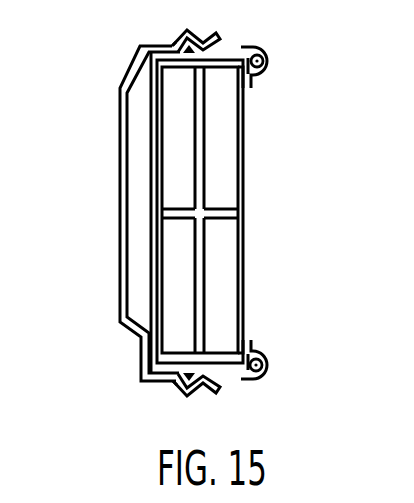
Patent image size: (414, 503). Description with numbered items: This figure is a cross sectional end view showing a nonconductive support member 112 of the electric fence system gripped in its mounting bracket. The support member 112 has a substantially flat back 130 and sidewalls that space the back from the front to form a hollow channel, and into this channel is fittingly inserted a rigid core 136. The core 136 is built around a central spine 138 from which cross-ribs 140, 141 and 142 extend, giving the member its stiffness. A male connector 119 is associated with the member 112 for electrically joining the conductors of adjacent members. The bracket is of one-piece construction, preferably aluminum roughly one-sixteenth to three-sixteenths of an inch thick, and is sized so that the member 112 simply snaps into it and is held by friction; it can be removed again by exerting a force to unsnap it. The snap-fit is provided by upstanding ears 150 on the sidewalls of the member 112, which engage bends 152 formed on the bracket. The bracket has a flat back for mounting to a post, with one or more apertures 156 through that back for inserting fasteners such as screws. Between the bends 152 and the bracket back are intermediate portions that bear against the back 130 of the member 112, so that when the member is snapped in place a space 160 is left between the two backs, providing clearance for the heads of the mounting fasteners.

The nonconductive support member 112 is at (262, 49).
The male connector 119 is at (263, 63).
The flat back 130 is at (150, 162).
The rigid core 136 is at (224, 188).
The central spine 138 is at (207, 182).
The cross-rib 140 is at (225, 74).
The cross-rib 141 is at (227, 222).
The cross-rib 142 is at (226, 352).
The upstanding ear 150 is at (176, 45).
The bend 152 is at (192, 28).
The aperture 156 is at (122, 213).
The space 160 is at (127, 275).